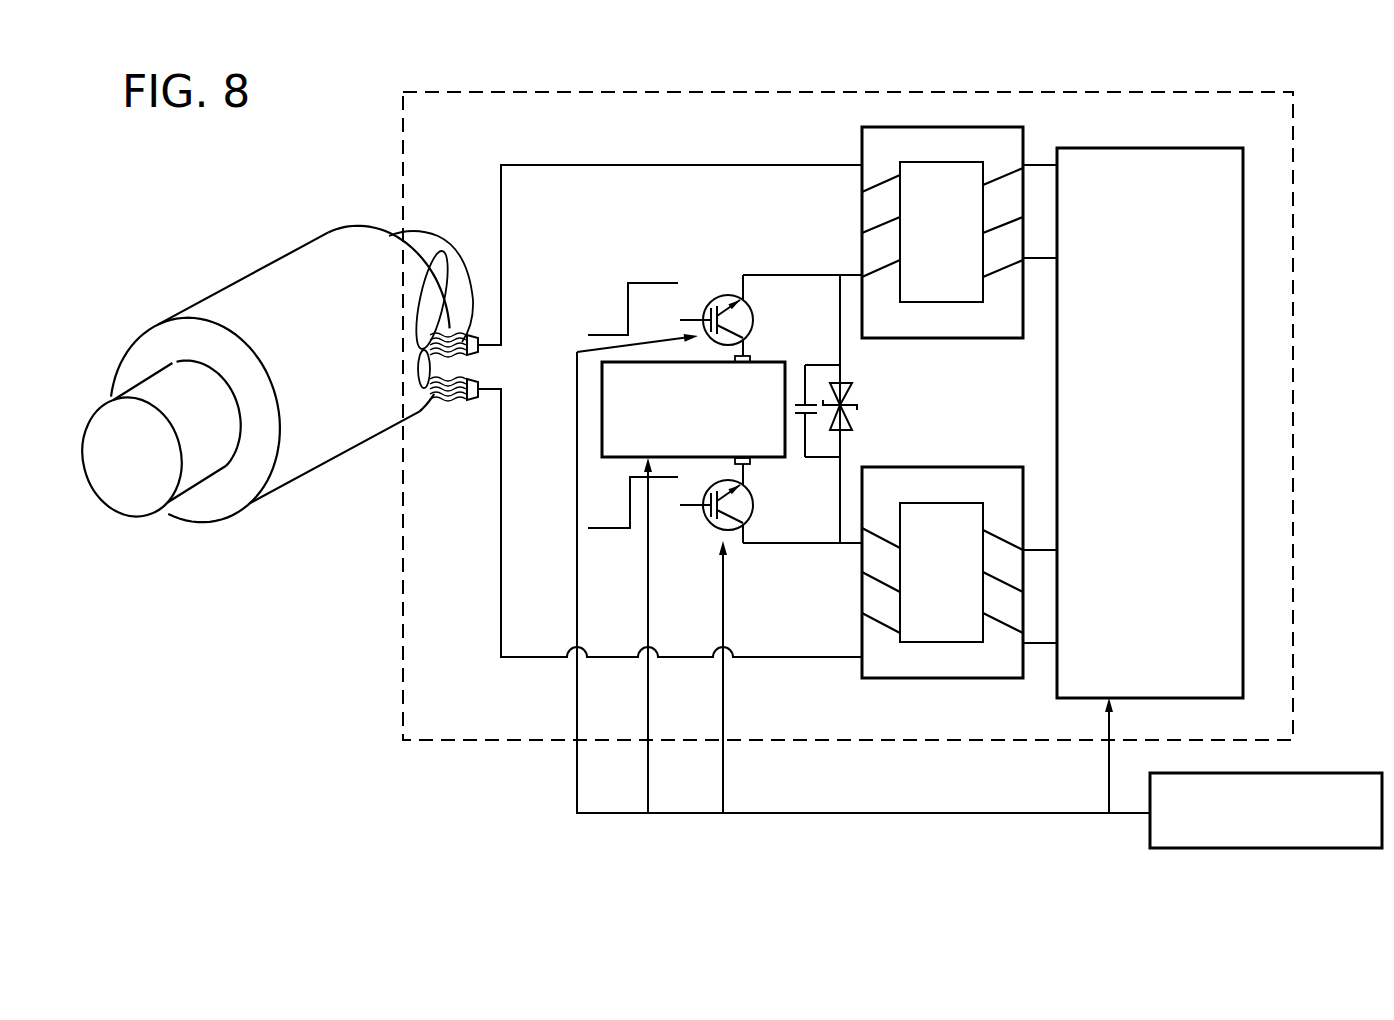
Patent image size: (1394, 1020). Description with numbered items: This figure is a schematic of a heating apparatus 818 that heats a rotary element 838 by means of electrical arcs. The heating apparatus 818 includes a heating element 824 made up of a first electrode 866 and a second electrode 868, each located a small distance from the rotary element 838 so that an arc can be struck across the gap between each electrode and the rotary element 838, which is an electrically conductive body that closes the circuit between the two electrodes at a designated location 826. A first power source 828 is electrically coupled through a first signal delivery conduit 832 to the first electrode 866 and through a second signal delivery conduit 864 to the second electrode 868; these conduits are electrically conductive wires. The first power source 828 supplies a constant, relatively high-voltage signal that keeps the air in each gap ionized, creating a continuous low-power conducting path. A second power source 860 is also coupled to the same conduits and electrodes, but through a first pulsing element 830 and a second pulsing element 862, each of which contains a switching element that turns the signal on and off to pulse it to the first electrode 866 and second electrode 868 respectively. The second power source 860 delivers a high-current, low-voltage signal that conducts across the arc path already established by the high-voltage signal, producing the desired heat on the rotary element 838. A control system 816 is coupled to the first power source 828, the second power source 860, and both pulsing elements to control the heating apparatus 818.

The control system 816 is at (1246, 835).
The heating apparatus 818 is at (403, 137).
The heating element 824 is at (455, 415).
The designated location 826 is at (434, 252).
The first power source 828 is at (1130, 449).
The first pulsing element 830 is at (722, 294).
The first signal delivery conduit 832 is at (562, 163).
The rotary element 838 is at (213, 283).
The second power source 860 is at (673, 447).
The second pulsing element 862 is at (713, 525).
The second signal delivery conduit 864 is at (520, 660).
The first electrode 866 is at (437, 323).
The second electrode 868 is at (433, 390).